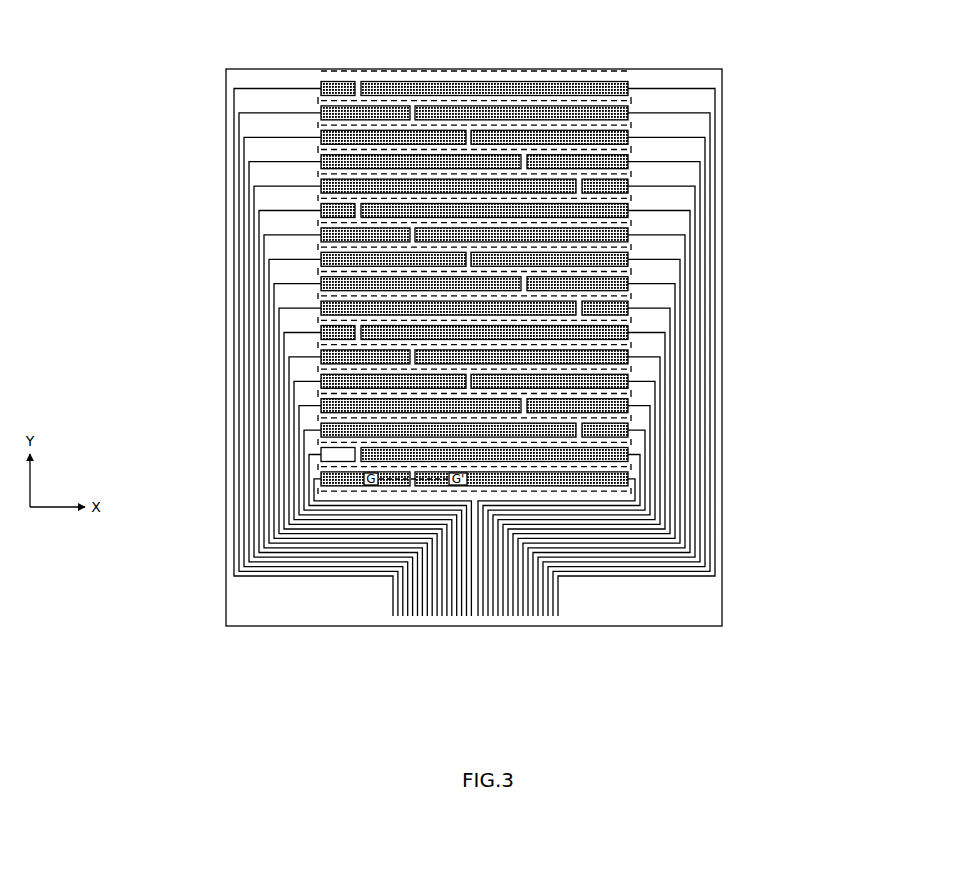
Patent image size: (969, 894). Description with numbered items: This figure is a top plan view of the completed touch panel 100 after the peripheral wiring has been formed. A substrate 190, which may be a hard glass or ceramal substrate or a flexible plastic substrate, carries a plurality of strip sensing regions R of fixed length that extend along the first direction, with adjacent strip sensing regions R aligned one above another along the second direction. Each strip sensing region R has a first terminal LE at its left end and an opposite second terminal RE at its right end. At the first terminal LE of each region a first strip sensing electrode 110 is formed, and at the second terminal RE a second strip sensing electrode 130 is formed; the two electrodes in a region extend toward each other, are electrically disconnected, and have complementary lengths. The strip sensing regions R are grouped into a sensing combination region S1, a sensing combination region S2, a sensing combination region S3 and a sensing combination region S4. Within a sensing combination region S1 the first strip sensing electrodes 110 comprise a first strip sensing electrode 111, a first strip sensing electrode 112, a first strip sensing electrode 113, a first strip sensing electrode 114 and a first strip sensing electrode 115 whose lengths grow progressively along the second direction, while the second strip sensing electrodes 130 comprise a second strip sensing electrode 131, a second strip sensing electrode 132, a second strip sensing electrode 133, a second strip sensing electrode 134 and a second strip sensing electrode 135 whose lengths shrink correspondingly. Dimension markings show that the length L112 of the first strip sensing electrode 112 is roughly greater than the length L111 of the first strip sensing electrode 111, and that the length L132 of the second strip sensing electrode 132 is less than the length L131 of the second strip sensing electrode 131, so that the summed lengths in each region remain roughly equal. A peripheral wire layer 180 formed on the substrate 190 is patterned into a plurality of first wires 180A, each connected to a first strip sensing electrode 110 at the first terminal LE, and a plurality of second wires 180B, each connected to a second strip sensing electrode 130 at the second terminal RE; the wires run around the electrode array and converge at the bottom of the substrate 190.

The touch panel 100 is at (796, 47).
The first strip sensing electrode 110 is at (364, 284).
The first strip sensing electrode 111 is at (311, 80).
The first strip sensing electrode 112 is at (311, 105).
The first strip sensing electrode 113 is at (311, 129).
The first strip sensing electrode 114 is at (311, 154).
The first strip sensing electrode 115 is at (311, 178).
The second strip sensing electrode 130 is at (578, 284).
The second strip sensing electrode 131 is at (622, 80).
The second strip sensing electrode 132 is at (622, 105).
The second strip sensing electrode 133 is at (622, 129).
The second strip sensing electrode 134 is at (622, 154).
The second strip sensing electrode 135 is at (622, 178).
The peripheral wire layer 180 is at (474, 370).
The first wire 180A is at (384, 609).
The second wire 180B is at (469, 609).
The substrate 190 is at (715, 597).
The sensing combination region S1 is at (135, 65).
The sensing combination region S2 is at (135, 190).
The sensing combination region S3 is at (135, 312).
The sensing combination region S4 is at (135, 434).
The strip sensing region R is at (800, 72).
The first terminal LE is at (311, 71).
The second terminal RE is at (623, 71).
The length of first strip sensing electrode 111 L111 is at (347, 68).
The length of first strip sensing electrode 112 L112 is at (314, 56).
The length of second strip sensing electrode 131 L131 is at (353, 32).
The length of second strip sensing electrode 132 L132 is at (407, 90).